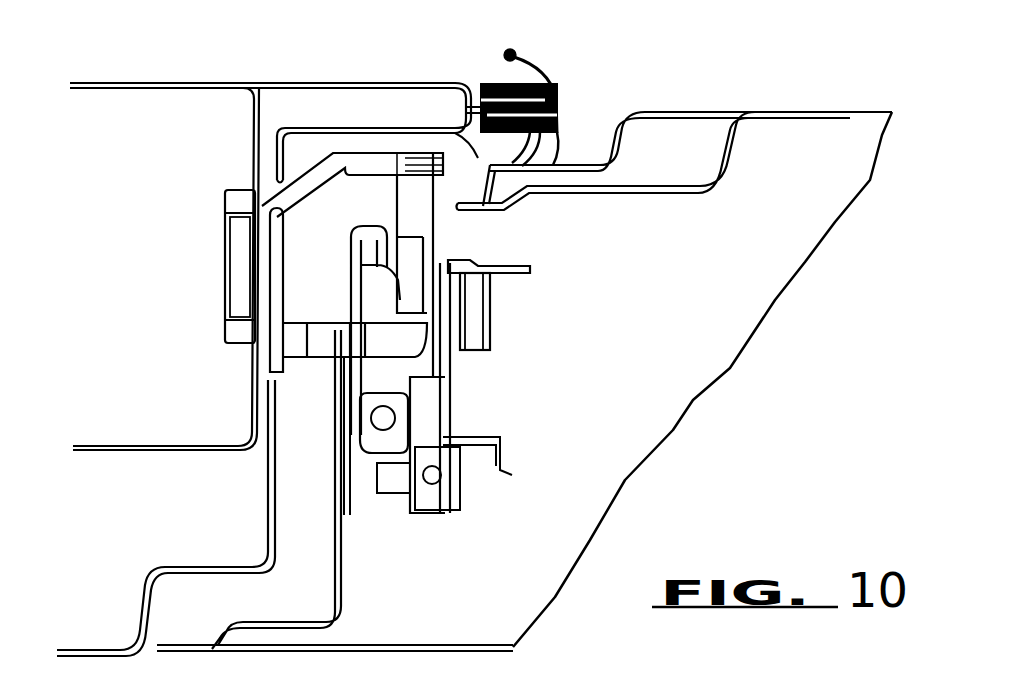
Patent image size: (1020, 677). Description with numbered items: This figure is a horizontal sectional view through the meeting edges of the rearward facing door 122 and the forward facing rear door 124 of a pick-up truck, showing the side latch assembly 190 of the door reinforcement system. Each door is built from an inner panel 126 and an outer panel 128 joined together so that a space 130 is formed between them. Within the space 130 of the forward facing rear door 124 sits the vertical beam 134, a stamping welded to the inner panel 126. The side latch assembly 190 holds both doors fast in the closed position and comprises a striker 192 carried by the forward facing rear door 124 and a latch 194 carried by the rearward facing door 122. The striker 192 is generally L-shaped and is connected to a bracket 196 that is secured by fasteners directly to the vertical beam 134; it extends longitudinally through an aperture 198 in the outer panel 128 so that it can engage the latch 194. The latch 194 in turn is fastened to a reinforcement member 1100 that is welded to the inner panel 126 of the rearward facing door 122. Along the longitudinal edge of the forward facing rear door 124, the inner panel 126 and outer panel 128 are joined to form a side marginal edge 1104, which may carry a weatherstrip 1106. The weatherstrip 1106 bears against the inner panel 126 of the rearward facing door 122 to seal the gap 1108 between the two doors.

The rearward facing door 122 is at (826, 110).
The forward facing rear door 124 is at (185, 82).
The inner panel 126 is at (257, 82).
The outer panel 128 is at (90, 648).
The space 130 is at (133, 130).
The vertical beam 134 is at (101, 445).
The side latch assembly 190 is at (498, 320).
The striker 192 is at (407, 190).
The latch 194 is at (447, 396).
The bracket 196 is at (307, 184).
The aperture 198 is at (268, 378).
The reinforcement member 1100 is at (697, 195).
The side marginal edge 1104 is at (560, 96).
The weatherstrip 1106 is at (556, 145).
The gap 1108 is at (380, 133).